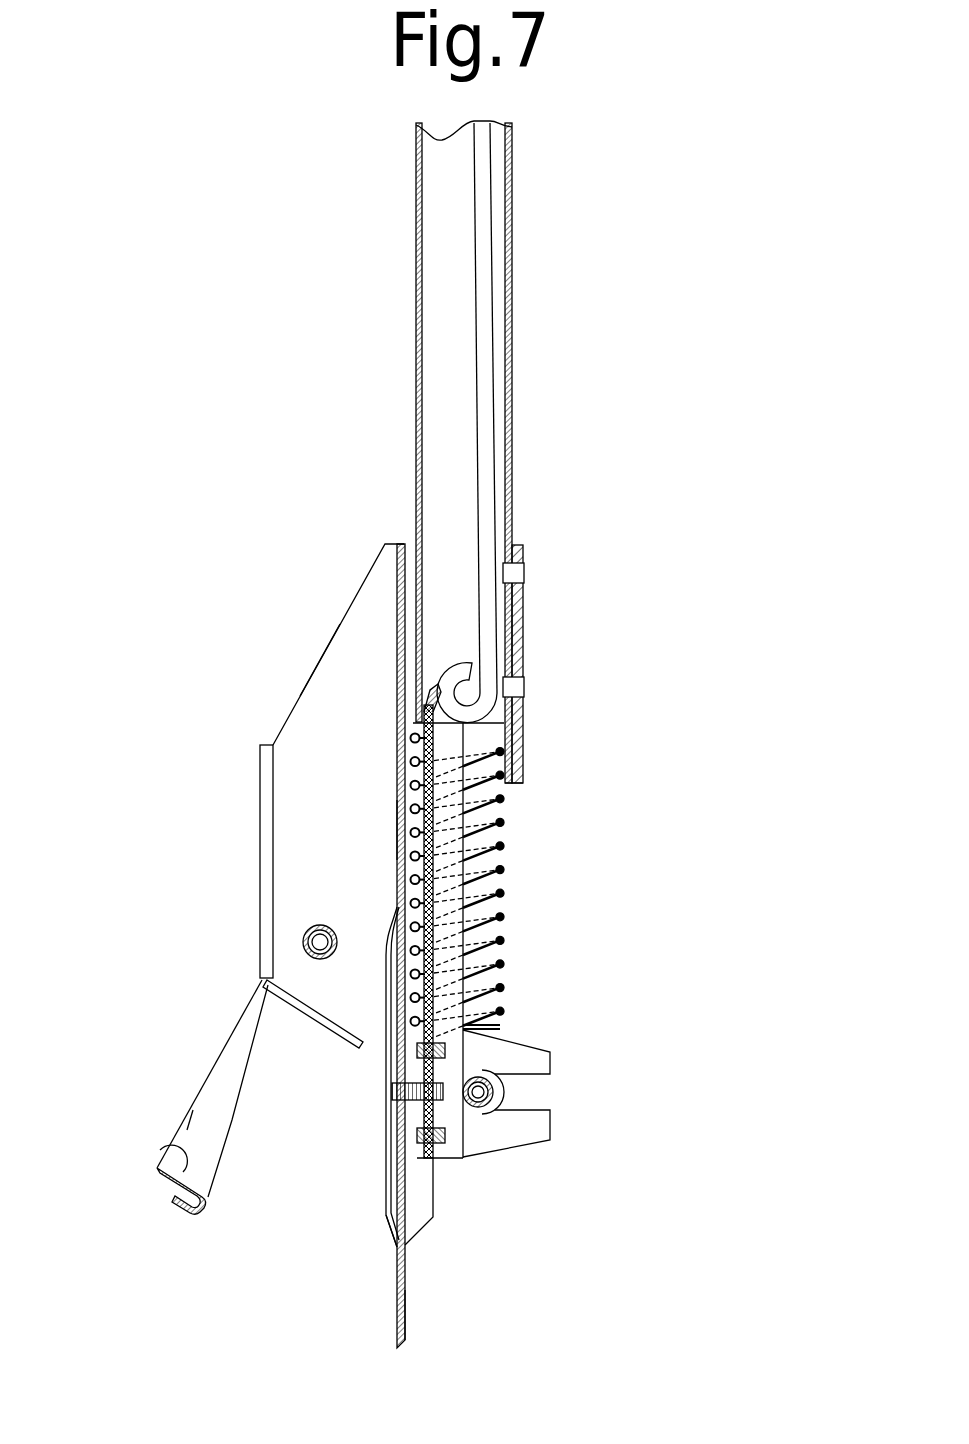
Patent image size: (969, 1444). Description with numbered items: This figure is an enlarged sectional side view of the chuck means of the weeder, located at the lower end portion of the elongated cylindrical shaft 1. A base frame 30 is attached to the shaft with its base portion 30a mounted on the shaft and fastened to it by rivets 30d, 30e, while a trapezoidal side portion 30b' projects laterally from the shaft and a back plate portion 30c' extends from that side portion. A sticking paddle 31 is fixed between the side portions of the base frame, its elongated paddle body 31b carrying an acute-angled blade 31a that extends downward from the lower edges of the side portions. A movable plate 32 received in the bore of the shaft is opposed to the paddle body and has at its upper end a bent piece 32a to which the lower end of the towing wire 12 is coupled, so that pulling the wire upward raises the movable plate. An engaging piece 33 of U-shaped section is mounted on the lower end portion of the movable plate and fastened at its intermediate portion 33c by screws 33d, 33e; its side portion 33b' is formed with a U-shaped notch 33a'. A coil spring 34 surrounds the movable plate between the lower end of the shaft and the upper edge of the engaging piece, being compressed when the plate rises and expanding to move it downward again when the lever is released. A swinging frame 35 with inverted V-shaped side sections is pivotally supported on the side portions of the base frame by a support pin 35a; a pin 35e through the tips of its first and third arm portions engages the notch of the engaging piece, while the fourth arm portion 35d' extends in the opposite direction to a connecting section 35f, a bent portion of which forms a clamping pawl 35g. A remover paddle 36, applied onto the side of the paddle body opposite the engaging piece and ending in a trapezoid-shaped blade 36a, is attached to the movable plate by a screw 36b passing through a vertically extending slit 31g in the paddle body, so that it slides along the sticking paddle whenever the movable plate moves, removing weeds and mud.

The elongated cylindrical shaft 1 is at (396, 340).
The towing wire 12 is at (493, 338).
The base frame 30 is at (325, 613).
The base portion 30a is at (525, 625).
The side portion 30b' is at (257, 671).
The back plate portion 30c' is at (179, 861).
The rivet 30d is at (525, 572).
The rivet 30e is at (525, 690).
The sticking paddle 31 is at (385, 1292).
The blade 31a is at (405, 1302).
The paddle body 31b is at (397, 826).
The slit 31g is at (332, 1027).
The movable plate 32 is at (460, 838).
The bent piece 32a is at (436, 702).
The engaging piece 33 is at (512, 1153).
The notch 33a' is at (576, 1075).
The side portion 33b' is at (576, 1137).
The intermediate portion 33c is at (465, 953).
The screw 33d is at (447, 1046).
The screw 33e is at (447, 1141).
The coil spring 34 is at (497, 917).
The swinging frame 35 is at (212, 1028).
The support pin 35a is at (303, 942).
The fourth arm portion 35d' is at (121, 1108).
The pin 35e is at (492, 1078).
The connecting section 35f is at (158, 1150).
The clamping pawl 35g is at (177, 1220).
The remover paddle 36 is at (375, 1163).
The blade 36a is at (383, 1225).
The screw 36b is at (388, 1100).